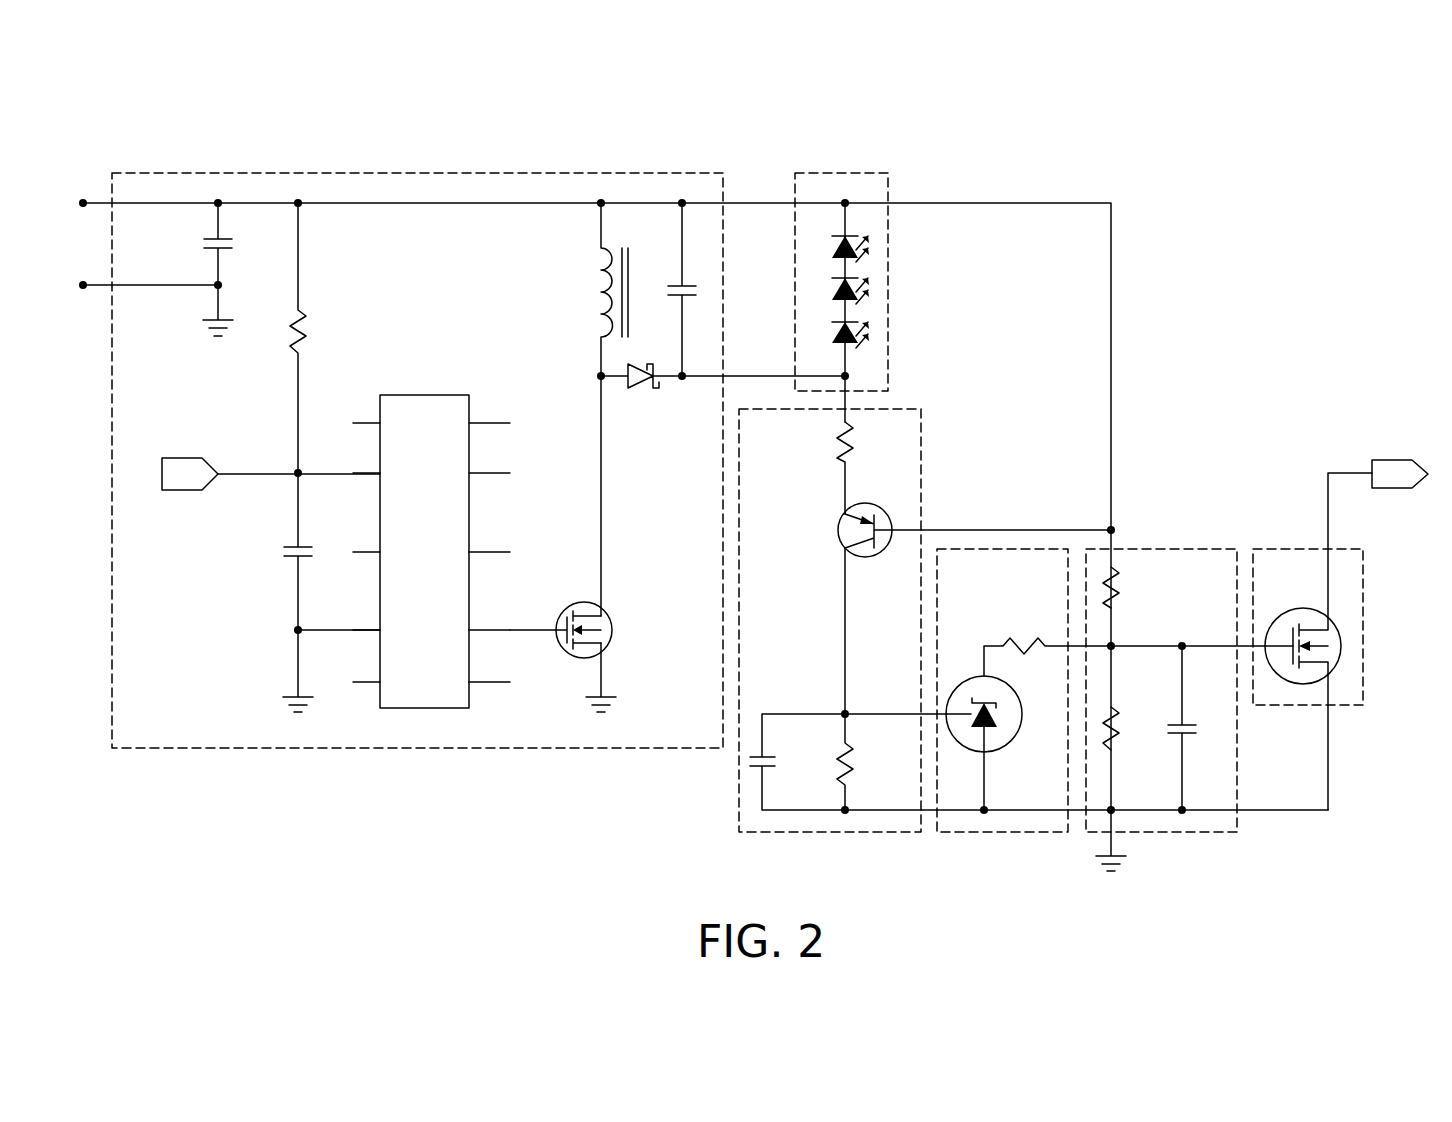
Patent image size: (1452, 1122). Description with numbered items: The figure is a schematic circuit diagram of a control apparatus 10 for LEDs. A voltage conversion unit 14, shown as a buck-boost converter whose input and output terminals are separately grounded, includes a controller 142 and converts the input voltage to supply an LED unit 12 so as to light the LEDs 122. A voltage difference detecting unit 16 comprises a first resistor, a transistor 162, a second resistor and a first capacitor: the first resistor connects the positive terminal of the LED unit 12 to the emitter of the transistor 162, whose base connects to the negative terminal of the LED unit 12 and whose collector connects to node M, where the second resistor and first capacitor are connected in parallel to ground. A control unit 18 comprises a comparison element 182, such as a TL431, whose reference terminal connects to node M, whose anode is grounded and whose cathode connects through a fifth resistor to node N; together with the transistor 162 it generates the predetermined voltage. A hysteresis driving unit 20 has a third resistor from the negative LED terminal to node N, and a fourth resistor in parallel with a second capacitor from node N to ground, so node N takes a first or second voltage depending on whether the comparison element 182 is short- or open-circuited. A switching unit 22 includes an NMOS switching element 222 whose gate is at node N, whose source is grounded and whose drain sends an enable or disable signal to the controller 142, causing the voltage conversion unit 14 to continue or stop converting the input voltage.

The control apparatus for LEDs 10 is at (1404, 123).
The LED unit 12 is at (873, 173).
The LEDs 122 is at (858, 352).
The voltage conversion unit 14 is at (390, 173).
The controller 142 is at (423, 708).
The voltage difference detecting unit 16 is at (830, 832).
The transistor 162 is at (882, 508).
The control unit 18 is at (950, 832).
The comparison element 182 is at (1012, 745).
The hysteresis driving unit 20 is at (1192, 832).
The switching unit 22 is at (1363, 680).
The switching element 222 is at (1342, 646).